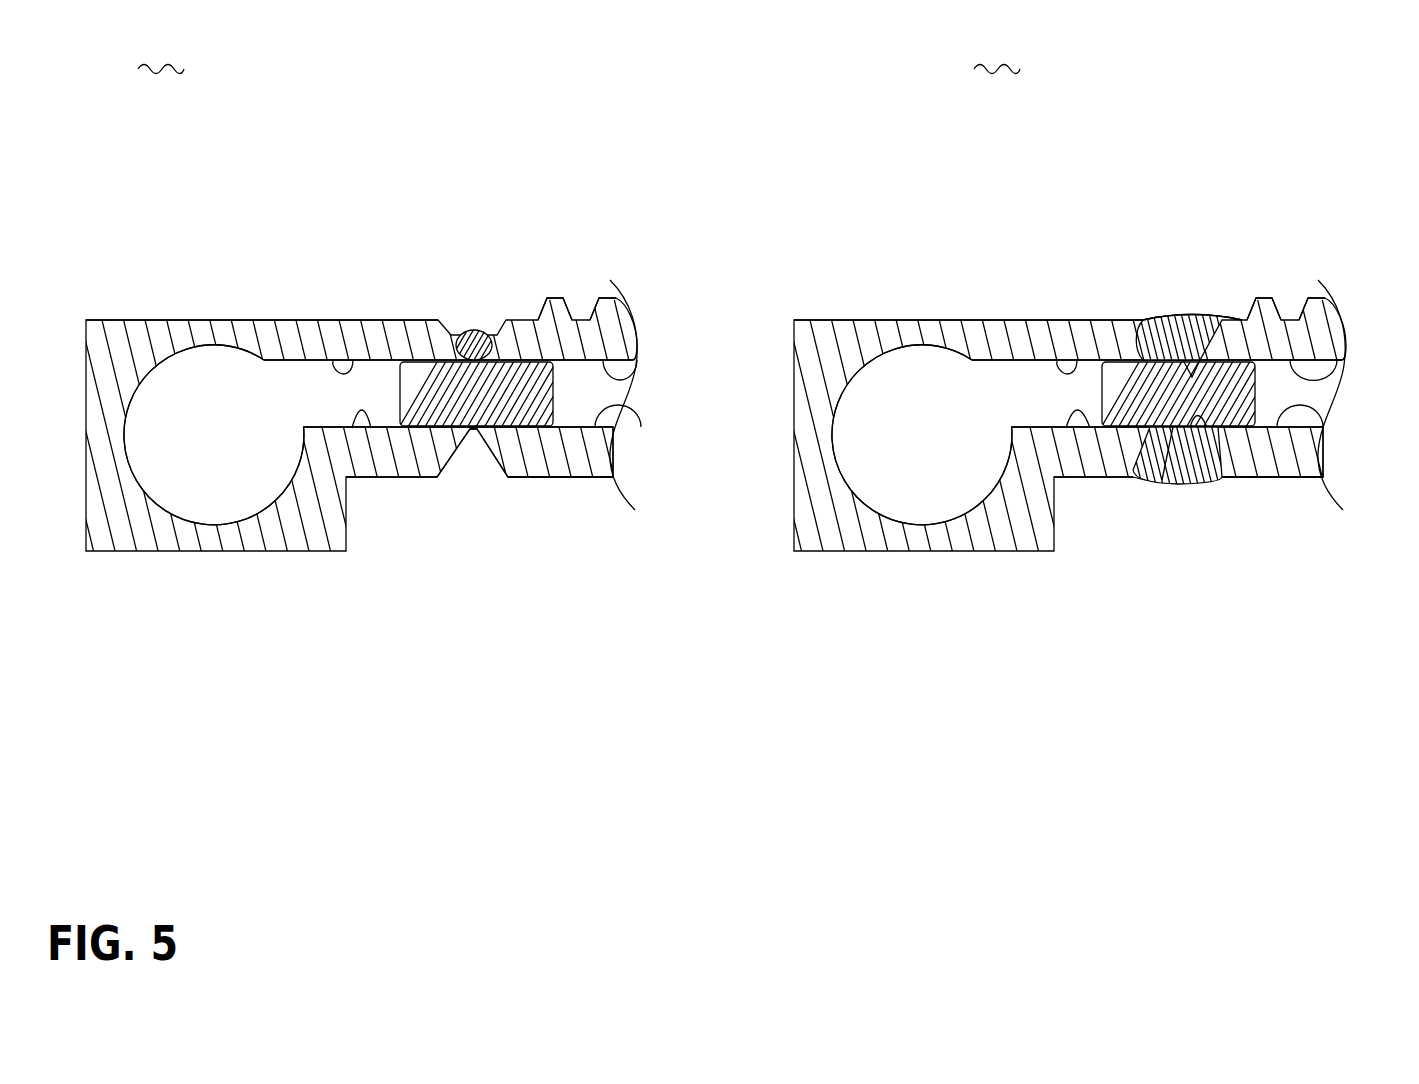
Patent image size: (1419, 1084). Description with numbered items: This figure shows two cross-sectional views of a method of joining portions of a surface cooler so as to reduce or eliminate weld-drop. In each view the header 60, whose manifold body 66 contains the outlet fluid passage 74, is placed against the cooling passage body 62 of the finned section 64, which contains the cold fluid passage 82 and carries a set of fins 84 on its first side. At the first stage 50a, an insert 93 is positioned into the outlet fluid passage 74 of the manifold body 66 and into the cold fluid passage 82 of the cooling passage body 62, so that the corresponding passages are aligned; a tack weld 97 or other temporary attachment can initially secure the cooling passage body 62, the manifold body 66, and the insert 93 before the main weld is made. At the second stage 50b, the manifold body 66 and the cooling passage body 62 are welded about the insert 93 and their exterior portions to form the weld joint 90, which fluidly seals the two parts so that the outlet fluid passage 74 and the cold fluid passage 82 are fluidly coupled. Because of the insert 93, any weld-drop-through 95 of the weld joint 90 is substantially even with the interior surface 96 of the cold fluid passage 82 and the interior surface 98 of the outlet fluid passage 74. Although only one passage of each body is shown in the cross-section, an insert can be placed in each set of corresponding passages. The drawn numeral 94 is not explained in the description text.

The first method stage 50a is at (161, 58).
The second method stage 50b is at (997, 58).
The header 60 is at (150, 318).
The cooling passage body 62 is at (598, 478).
The finned section 64 is at (540, 477).
The manifold body 66 is at (200, 318).
The outlet fluid passage 74 is at (303, 398).
The cold fluid passage 82 is at (585, 387).
The fins 84 is at (608, 298).
The weld joint 90 is at (1142, 320).
The insert 93 is at (468, 395).
The insert 94 is at (1158, 320).
The weld-drop-through 95 is at (1200, 320).
The interior surface of the cold fluid passage 96 is at (637, 378).
The tack weld 97 is at (479, 330).
The interior surface of the outlet fluid passage 98 is at (353, 360).